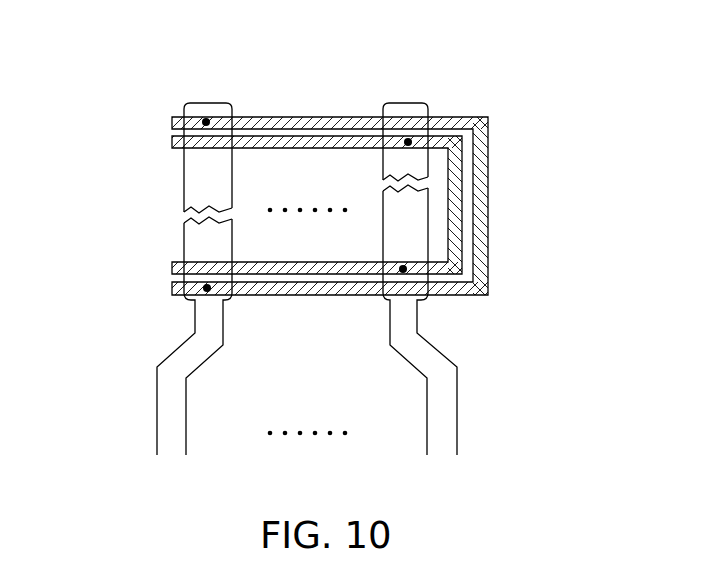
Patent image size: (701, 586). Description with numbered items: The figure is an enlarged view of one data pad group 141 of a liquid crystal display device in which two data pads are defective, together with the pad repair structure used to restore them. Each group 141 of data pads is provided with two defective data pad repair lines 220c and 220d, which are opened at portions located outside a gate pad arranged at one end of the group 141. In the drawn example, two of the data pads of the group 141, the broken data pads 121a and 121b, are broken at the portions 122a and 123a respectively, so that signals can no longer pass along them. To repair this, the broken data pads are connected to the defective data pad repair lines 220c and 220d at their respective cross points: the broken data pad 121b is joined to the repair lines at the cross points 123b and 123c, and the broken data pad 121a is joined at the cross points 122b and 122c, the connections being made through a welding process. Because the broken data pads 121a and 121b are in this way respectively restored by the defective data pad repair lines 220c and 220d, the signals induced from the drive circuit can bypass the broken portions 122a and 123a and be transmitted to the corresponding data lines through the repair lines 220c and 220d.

The data pad group 141 is at (509, 104).
The defective data pad repair line 220d is at (283, 122).
The defective data pad repair line 220c is at (338, 142).
The broken data pad 121a is at (418, 176).
The broken data pad 121b is at (192, 175).
The broken portion 122a is at (415, 188).
The cross point 122b is at (409, 141).
The cross point 122c is at (402, 270).
The broken portion 123a is at (188, 210).
The cross point 123b is at (207, 121).
The cross point 123c is at (208, 289).